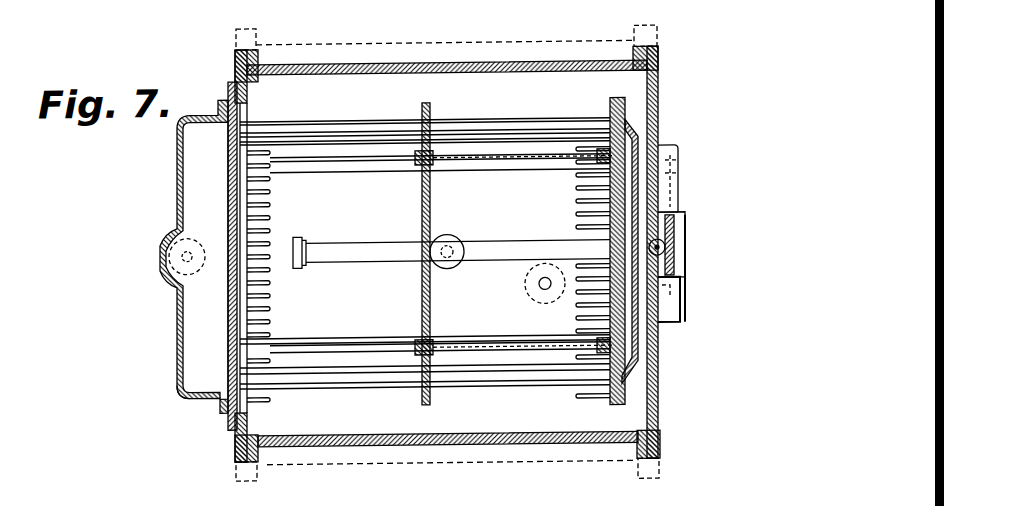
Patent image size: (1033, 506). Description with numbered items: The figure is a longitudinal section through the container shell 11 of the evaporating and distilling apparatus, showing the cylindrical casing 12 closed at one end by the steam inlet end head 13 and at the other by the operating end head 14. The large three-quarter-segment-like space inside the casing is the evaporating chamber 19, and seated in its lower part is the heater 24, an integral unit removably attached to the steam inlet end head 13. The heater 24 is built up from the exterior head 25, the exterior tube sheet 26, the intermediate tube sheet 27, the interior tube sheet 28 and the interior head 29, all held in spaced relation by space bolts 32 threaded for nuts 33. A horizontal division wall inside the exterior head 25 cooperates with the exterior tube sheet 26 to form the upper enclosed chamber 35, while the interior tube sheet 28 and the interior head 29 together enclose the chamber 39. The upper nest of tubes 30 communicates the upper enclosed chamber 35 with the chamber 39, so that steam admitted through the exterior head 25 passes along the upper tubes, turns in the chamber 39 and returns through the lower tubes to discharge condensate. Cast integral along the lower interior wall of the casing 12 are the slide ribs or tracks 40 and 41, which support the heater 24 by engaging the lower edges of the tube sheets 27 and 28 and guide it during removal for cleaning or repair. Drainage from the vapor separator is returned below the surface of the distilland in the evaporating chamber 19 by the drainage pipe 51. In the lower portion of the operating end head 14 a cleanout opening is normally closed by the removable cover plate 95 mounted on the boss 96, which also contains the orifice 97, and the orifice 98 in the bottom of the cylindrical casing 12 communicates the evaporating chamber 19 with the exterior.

The container shell 11 is at (580, 500).
The cylindrical casing 12 is at (452, 449).
The steam inlet end head 13 is at (237, 447).
The operating end head 14 is at (658, 385).
The evaporating chamber 19 is at (365, 421).
The heater 24 is at (177, 340).
The exterior head 25 is at (177, 380).
The exterior tube sheet 26 is at (232, 331).
The intermediate tube sheet 27 is at (422, 207).
The interior tube sheet 28 is at (583, 226).
The interior head 29 is at (636, 393).
The upper nest of tubes 30 is at (270, 322).
The space bolts 32 is at (512, 166).
The nuts 33 is at (431, 168).
The upper enclosed chamber 35 is at (185, 310).
The chamber 39 is at (628, 318).
The slide rib or track 40 is at (348, 168).
The slide rib or track 41 is at (390, 330).
The drainage pipe 51 is at (677, 252).
The removable cover plate 95 is at (683, 287).
The boss 96 is at (673, 153).
The orifice 97 is at (678, 183).
The orifice 98 is at (543, 291).